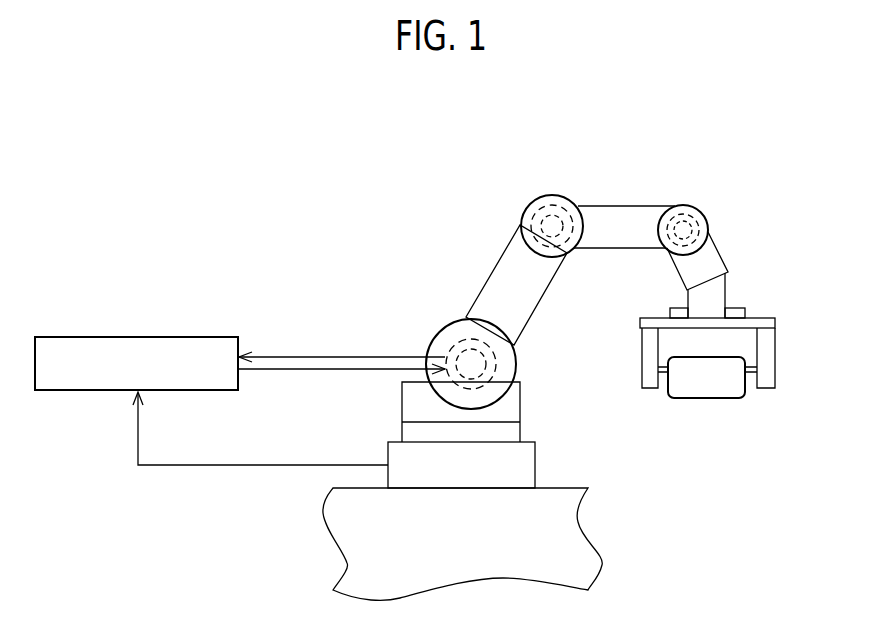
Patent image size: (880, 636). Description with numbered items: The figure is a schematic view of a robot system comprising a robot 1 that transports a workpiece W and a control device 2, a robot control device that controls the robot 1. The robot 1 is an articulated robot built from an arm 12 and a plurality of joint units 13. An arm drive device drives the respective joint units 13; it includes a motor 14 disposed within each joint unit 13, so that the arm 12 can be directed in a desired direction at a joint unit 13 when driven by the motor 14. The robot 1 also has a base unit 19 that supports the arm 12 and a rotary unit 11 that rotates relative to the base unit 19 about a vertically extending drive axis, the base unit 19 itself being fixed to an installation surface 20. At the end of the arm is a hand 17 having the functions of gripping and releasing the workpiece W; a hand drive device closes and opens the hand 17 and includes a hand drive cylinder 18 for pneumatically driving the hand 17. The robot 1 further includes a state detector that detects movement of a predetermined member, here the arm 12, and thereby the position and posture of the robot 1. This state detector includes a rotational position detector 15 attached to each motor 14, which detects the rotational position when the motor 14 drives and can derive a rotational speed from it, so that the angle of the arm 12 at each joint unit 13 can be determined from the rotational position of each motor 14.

The robot 1 is at (633, 223).
The control device 2 is at (105, 337).
The rotary unit 11 is at (512, 437).
The arm 12 is at (500, 287).
The joint unit 13 is at (447, 338).
The motor 14 is at (495, 352).
The rotational position detector 15 is at (490, 365).
The hand 17 is at (763, 362).
The hand drive cylinder 18 is at (735, 307).
The base unit 19 is at (512, 460).
The installation surface 20 is at (570, 488).
The workpiece W is at (723, 382).